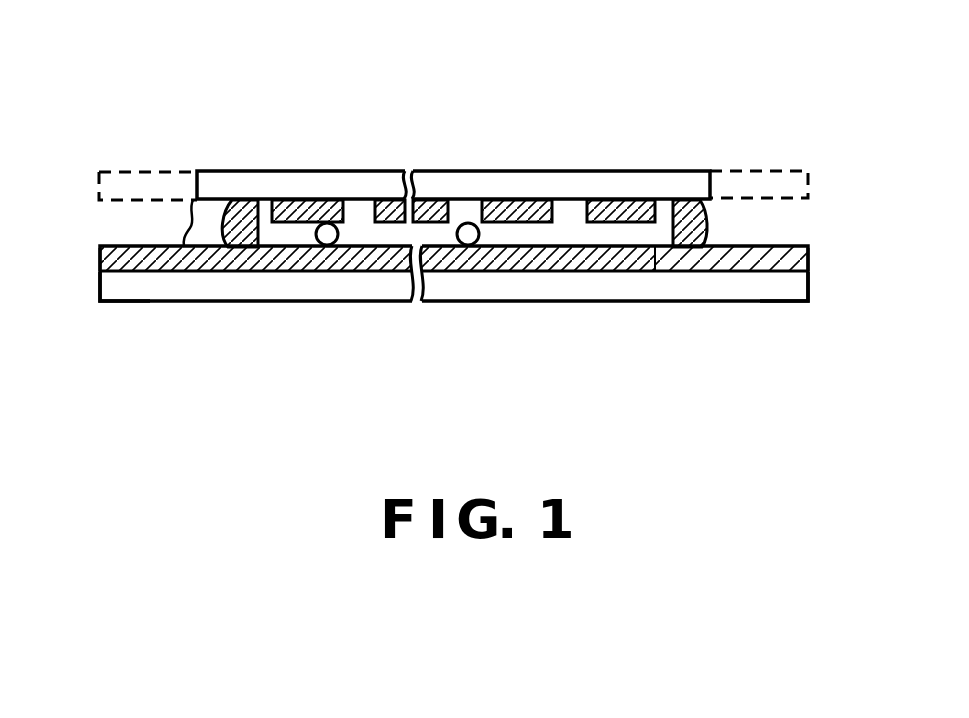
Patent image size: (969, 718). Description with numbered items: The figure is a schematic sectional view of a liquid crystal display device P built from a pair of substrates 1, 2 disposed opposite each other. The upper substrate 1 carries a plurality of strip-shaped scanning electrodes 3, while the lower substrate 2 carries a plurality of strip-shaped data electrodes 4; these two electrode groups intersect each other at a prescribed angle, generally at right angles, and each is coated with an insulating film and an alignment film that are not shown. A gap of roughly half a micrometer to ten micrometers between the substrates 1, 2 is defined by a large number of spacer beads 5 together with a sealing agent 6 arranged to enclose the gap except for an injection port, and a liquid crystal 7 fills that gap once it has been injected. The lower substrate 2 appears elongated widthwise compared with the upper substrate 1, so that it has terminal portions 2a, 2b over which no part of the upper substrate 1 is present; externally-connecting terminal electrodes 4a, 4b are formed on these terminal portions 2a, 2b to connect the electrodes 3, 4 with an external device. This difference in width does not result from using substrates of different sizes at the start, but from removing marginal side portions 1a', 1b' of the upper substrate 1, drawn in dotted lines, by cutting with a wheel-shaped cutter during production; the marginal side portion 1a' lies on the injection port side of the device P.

The liquid crystal display device P is at (749, 96).
The substrate 1 is at (669, 170).
The marginal side portion 1a' is at (148, 153).
The marginal side portion 1b' is at (767, 147).
The substrate 2 is at (726, 303).
The terminal portion 2a is at (155, 283).
The terminal portion 2b is at (788, 285).
The scanning electrodes 3 is at (600, 200).
The data electrodes 4 is at (559, 274).
The terminal electrodes 4a is at (100, 256).
The terminal electrodes 4b is at (808, 258).
The spacer beads 5 is at (327, 223).
The sealing agent 6 is at (705, 215).
The liquid crystal 7 is at (580, 233).